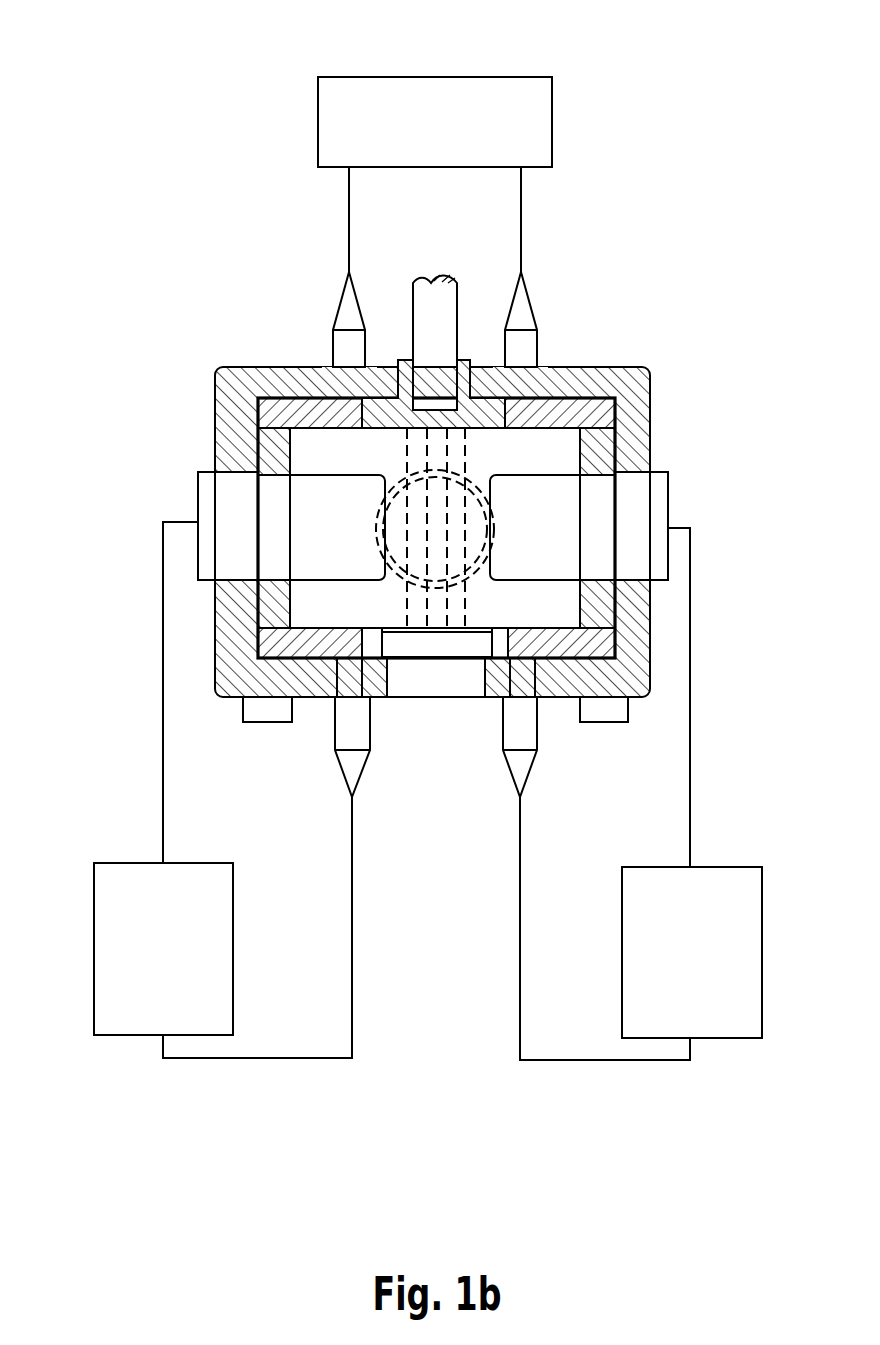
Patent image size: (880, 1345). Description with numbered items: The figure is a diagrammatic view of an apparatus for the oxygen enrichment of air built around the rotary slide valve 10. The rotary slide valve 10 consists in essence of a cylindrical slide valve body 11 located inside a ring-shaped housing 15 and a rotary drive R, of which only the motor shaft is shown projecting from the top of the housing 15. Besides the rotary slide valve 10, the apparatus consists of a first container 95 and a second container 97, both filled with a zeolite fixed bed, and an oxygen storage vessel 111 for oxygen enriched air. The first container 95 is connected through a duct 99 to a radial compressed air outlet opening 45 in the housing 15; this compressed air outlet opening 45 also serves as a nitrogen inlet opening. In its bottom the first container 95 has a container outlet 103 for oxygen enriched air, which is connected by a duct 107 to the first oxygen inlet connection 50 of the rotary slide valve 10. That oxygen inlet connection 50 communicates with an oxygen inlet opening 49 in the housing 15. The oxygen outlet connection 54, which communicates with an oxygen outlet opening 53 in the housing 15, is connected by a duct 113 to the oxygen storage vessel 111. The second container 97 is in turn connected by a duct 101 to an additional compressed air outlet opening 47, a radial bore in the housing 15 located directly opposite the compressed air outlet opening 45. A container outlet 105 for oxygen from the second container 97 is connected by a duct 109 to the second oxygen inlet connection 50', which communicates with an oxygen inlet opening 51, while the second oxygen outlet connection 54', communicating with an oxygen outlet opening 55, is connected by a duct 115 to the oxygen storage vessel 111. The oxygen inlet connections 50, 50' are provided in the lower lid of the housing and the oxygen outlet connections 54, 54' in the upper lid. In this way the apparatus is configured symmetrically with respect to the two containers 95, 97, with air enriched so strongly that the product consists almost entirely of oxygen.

The rotary slide valve 10 is at (180, 354).
The slide valve body 11 is at (557, 452).
The housing 15 is at (625, 375).
The rotary drive R is at (425, 290).
The compressed air outlet opening 45 is at (235, 493).
The additional compressed air outlet opening 47 is at (635, 497).
The oxygen inlet opening 49 is at (334, 698).
The oxygen inlet connection 50 is at (380, 747).
The second oxygen inlet connection 50' is at (555, 747).
The oxygen inlet opening 51 is at (500, 698).
The oxygen outlet opening 53 is at (335, 385).
The oxygen outlet connection 54 is at (332, 314).
The second oxygen outlet connection 54' is at (546, 314).
The oxygen outlet opening 55 is at (530, 385).
The first container 95 is at (112, 927).
The second container 97 is at (745, 928).
The duct 99 is at (163, 652).
The duct 101 is at (690, 652).
The container outlet 103 is at (162, 1037).
The container outlet 105 is at (690, 1040).
The duct 107 is at (302, 1060).
The duct 109 is at (568, 1062).
The oxygen storage vessel 111 is at (425, 90).
The duct 113 is at (347, 224).
The duct 115 is at (521, 226).